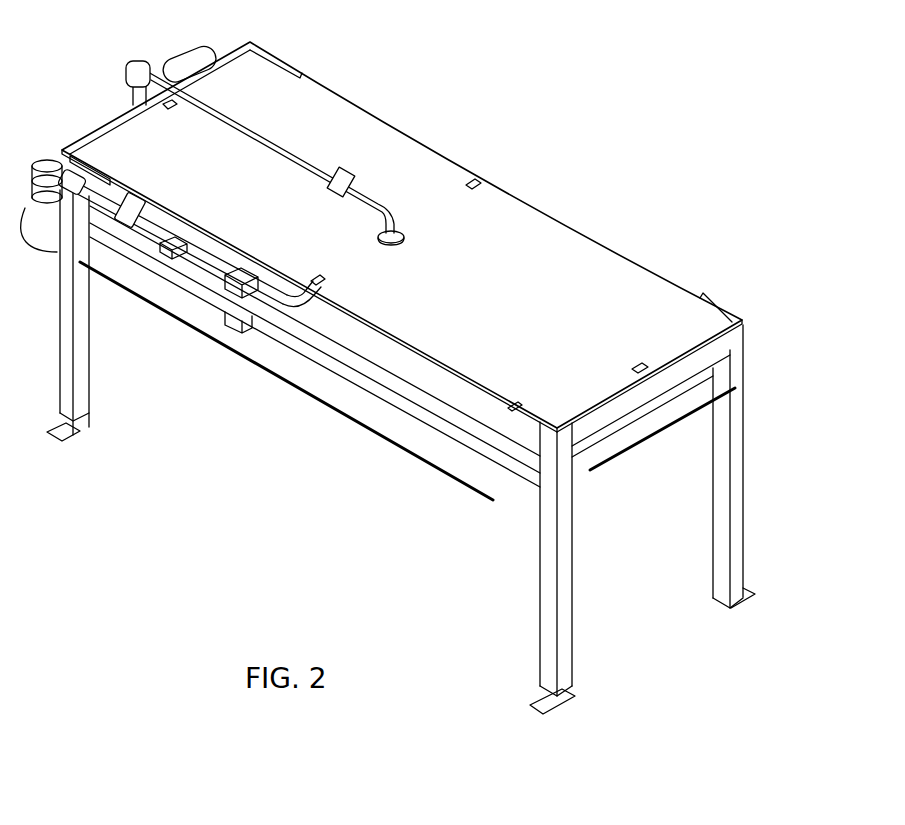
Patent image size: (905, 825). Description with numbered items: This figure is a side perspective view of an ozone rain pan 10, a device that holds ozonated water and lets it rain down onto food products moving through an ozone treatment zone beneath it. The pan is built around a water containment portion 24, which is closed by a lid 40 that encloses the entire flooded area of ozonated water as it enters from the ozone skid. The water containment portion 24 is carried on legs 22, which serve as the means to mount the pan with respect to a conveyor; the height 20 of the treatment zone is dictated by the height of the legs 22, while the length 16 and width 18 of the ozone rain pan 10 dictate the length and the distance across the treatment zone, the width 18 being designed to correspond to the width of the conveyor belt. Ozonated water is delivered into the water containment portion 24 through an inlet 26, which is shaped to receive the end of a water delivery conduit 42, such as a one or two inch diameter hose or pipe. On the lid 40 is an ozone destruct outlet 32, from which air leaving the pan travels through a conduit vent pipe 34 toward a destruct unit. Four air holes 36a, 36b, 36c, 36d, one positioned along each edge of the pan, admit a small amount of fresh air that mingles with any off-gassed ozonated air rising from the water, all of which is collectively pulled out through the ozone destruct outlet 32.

The ozone rain pan 10 is at (786, 222).
The length 16 is at (674, 421).
The width 18 is at (290, 386).
The height 20 is at (758, 336).
The legs 22 is at (723, 547).
The water containment portion 24 is at (553, 218).
The inlet 26 is at (318, 290).
The ozone destruct outlet 32 is at (405, 233).
The conduit vent pipe 34 is at (130, 68).
The air hole 36a is at (636, 366).
The air hole 36b is at (474, 178).
The air hole 36c is at (165, 110).
The air hole 36d is at (314, 279).
The lid 40 is at (470, 282).
The water delivery conduit 42 is at (168, 250).